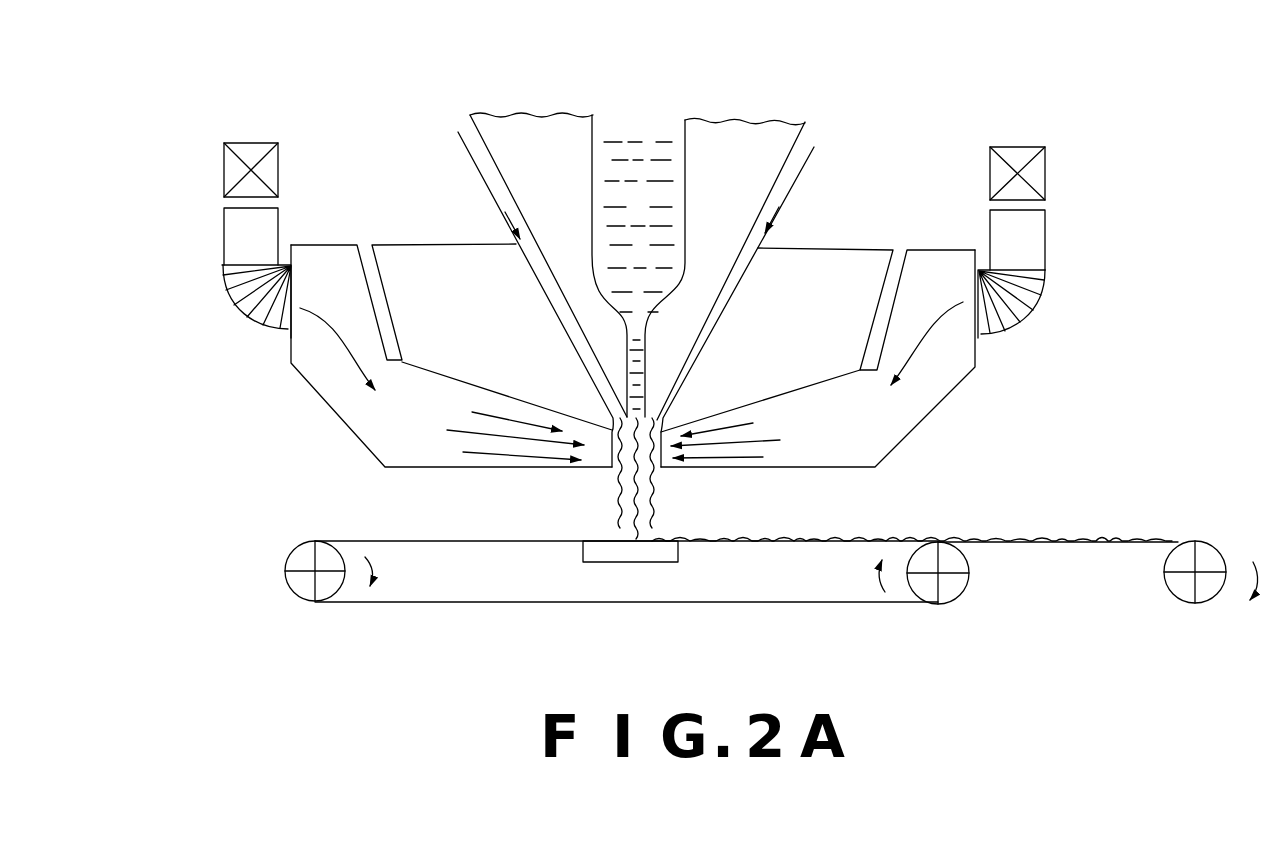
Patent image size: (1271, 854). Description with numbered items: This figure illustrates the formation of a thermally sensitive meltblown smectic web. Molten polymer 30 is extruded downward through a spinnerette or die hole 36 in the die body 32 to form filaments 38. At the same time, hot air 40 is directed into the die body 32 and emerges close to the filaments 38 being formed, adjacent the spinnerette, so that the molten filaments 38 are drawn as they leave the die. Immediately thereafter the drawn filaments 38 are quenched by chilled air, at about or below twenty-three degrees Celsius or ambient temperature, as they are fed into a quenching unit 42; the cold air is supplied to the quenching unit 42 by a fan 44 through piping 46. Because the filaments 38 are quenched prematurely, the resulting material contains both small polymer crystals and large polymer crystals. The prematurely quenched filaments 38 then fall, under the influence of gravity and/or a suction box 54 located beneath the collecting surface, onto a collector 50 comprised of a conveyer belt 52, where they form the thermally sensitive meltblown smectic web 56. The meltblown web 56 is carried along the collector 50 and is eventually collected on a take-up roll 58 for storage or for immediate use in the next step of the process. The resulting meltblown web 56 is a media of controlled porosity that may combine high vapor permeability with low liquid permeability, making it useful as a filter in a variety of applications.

The molten polymer 30 is at (639, 163).
The die body 32 is at (688, 197).
The spinnerette or die hole 36 is at (212, 428).
The filaments 38 is at (650, 497).
The hot air 40 is at (482, 170).
The quenching unit 42 is at (815, 428).
The fan 44 is at (1050, 178).
The piping 46 is at (1043, 303).
The collector 50 is at (527, 540).
The conveyer belt 52 is at (447, 602).
The suction box 54 is at (638, 563).
The thermally sensitive meltblown smectic web 56 is at (1073, 543).
The take-up roll 58 is at (1195, 603).